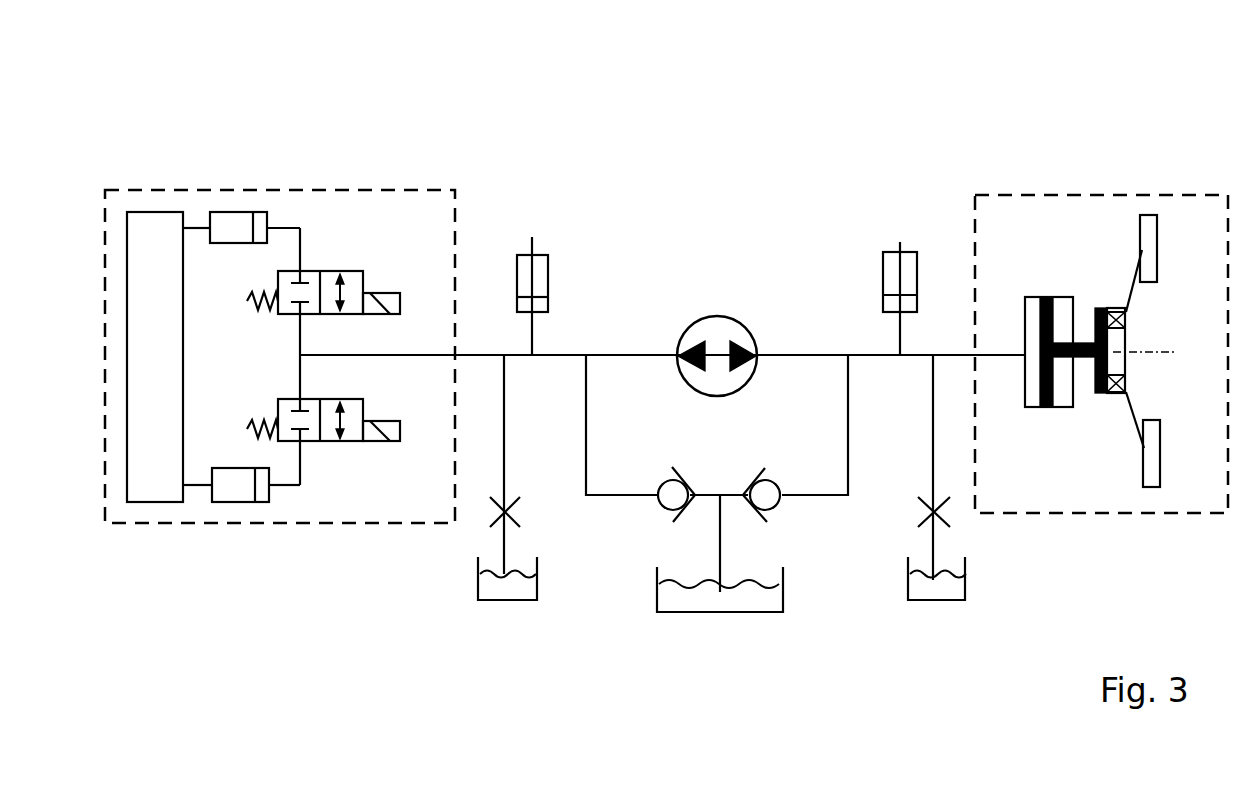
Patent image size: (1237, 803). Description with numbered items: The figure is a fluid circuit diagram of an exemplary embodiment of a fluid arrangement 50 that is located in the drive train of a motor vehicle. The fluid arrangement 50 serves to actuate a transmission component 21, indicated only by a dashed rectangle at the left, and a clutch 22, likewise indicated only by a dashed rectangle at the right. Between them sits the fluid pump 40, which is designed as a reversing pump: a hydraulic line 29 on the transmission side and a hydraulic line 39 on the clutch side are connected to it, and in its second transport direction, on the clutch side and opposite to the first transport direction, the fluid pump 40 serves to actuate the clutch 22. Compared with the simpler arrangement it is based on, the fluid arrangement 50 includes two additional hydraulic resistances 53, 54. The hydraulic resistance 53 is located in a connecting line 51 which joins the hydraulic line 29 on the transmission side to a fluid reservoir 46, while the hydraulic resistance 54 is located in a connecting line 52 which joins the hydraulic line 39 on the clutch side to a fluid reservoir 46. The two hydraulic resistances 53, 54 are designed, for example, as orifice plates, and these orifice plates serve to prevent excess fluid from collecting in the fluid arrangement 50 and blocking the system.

The transmission component 21 is at (280, 337).
The clutch 22 is at (1101, 332).
The hydraulic line on the transmission side 29 is at (567, 352).
The hydraulic line on the clutch side 39 is at (808, 352).
The fluid pump 40 is at (713, 314).
The fluid reservoir 46 is at (513, 602).
The fluid arrangement 50 is at (1120, 77).
The connecting line 51 is at (505, 468).
The connecting line 52 is at (932, 457).
The hydraulic resistance 53 is at (492, 507).
The hydraulic resistance 54 is at (950, 502).